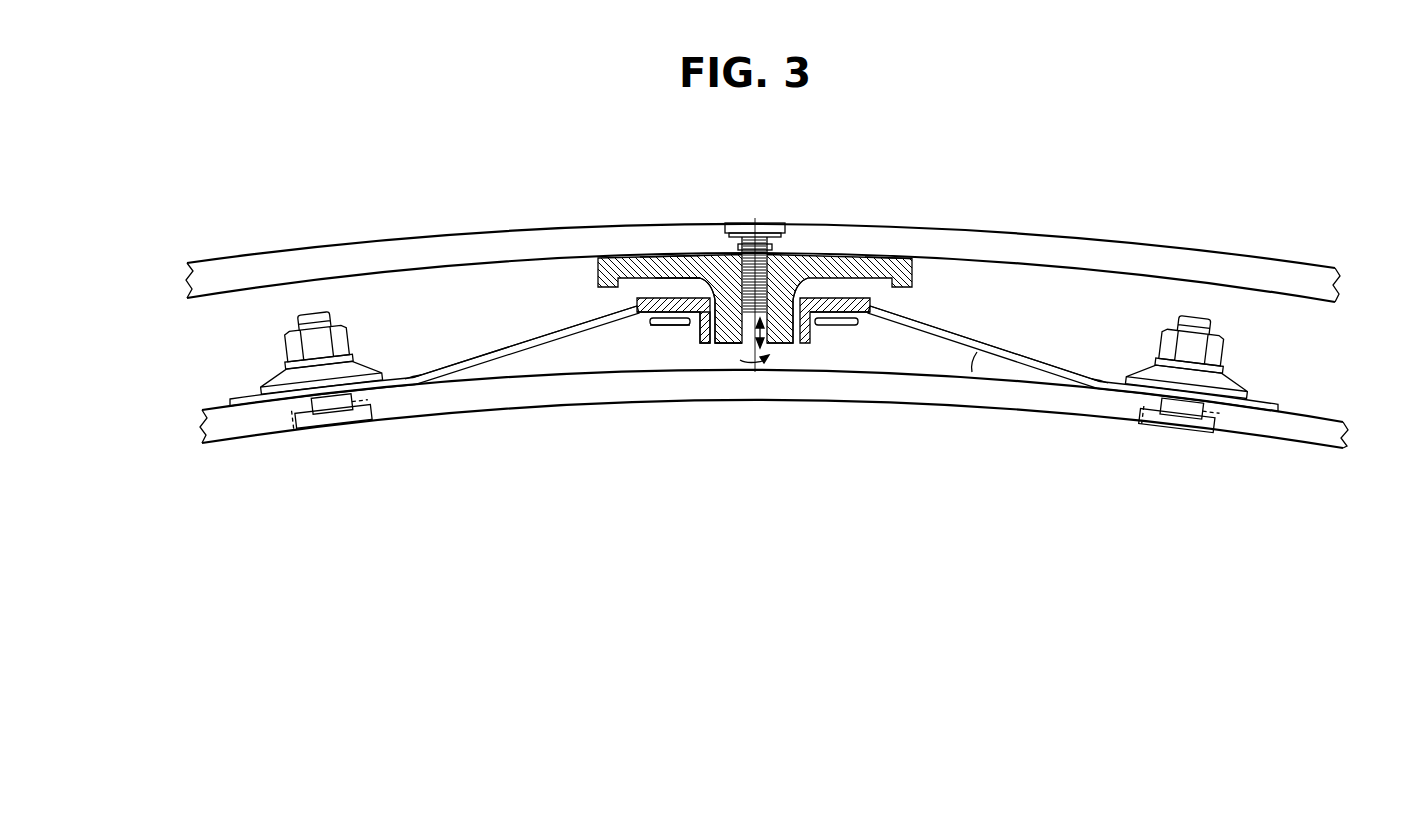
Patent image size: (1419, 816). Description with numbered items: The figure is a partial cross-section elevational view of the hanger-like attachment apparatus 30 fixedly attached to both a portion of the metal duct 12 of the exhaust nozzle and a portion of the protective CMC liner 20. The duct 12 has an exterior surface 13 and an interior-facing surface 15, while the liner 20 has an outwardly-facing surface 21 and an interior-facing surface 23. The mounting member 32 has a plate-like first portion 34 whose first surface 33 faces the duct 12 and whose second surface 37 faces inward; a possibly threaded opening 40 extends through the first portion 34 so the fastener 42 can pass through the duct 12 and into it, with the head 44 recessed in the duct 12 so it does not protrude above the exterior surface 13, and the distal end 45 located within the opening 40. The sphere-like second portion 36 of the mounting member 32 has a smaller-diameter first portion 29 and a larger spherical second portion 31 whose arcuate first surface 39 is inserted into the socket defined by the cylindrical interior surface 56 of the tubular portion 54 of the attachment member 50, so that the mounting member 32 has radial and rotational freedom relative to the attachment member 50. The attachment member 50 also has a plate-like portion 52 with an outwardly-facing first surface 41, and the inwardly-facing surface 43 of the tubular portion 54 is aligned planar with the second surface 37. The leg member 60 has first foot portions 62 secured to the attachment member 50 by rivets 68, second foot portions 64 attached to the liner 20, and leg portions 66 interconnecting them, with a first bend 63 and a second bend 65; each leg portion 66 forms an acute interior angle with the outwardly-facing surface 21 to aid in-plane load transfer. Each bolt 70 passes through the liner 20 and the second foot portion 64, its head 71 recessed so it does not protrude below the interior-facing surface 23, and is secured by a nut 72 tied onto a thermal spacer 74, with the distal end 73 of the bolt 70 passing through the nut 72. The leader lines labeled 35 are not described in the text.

The metal duct 12 is at (763, 258).
The exterior surface 13 is at (1157, 246).
The interior-facing surface 15 is at (1168, 278).
The protective CMC liner 20 is at (774, 421).
The outwardly-facing surface 21 is at (528, 372).
The interior-facing surface 23 is at (860, 402).
The first portion 29 is at (705, 280).
The attachment apparatus 30 is at (647, 296).
The second portion 31 is at (772, 362).
The mounting member 32 is at (880, 307).
The first surface 33 is at (618, 257).
The first portion 34 is at (882, 258).
The upper plate surface 35 is at (653, 256).
The second portion 36 is at (814, 281).
The second surface 37 is at (738, 344).
The first surface 39 is at (693, 277).
The opening 40 is at (792, 345).
The first surface 41 is at (674, 277).
The fastener 42 is at (777, 273).
The inwardly-facing surface 43 is at (705, 344).
The head 44 is at (725, 230).
The distal end 45 is at (758, 352).
The attachment member 50 is at (606, 387).
The plate-like portion 52 is at (878, 258).
The tubular portion 54 is at (812, 345).
The interior surface 56 is at (720, 344).
The leg member 60 is at (766, 354).
The first foot portion 62 is at (638, 310).
The first bend 63 is at (650, 323).
The second foot portion 64 is at (235, 400).
The second bend 65 is at (410, 378).
The leg portion 66 is at (495, 350).
The rivets 68 is at (685, 326).
The bolt 70 is at (305, 404).
The head 71 is at (370, 417).
The nut 72 is at (352, 338).
The distal end 73 is at (317, 313).
The thermal spacer 74 is at (290, 380).